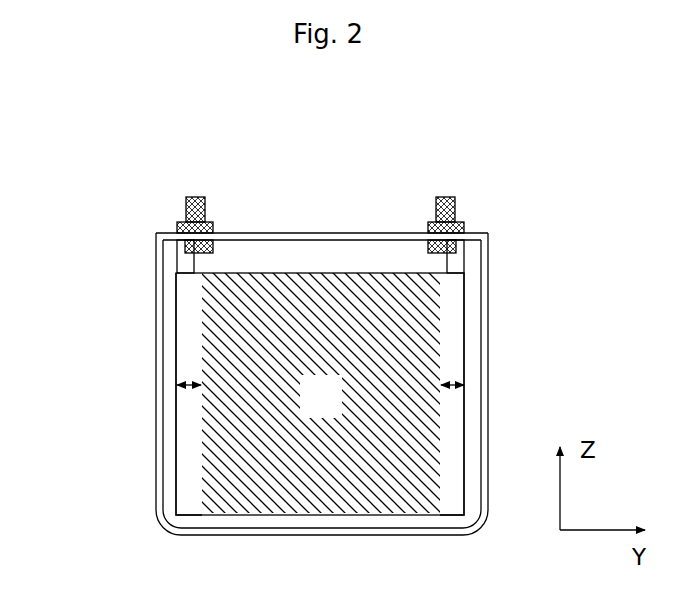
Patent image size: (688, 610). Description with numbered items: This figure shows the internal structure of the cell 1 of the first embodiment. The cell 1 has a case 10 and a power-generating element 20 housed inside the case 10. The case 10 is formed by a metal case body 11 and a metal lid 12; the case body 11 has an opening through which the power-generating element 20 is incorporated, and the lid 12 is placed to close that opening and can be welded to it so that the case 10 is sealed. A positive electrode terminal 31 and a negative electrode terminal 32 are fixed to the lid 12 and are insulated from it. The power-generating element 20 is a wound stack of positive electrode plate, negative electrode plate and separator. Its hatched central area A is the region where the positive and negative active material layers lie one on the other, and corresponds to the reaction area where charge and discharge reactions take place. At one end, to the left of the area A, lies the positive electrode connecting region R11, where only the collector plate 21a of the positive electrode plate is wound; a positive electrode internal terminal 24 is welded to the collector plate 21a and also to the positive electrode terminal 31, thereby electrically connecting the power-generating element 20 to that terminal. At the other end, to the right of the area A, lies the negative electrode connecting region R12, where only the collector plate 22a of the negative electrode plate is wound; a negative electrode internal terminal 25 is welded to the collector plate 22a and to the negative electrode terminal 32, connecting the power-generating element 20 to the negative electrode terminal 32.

The cell 1 is at (303, 366).
The case 10 is at (254, 344).
The case body 11 is at (153, 444).
The lid 12 is at (302, 230).
The power-generating element 20 is at (320, 348).
The collector plate of the positive electrode plate 21a is at (192, 497).
The collector plate of the negative electrode plate 22a is at (448, 497).
The positive electrode internal terminal 24 is at (184, 262).
The negative electrode internal terminal 25 is at (467, 261).
The positive electrode terminal 31 is at (196, 195).
The negative electrode terminal 32 is at (445, 195).
The positive electrode connecting region R11 is at (178, 385).
The negative electrode connecting region R12 is at (463, 385).
The area A is at (321, 396).